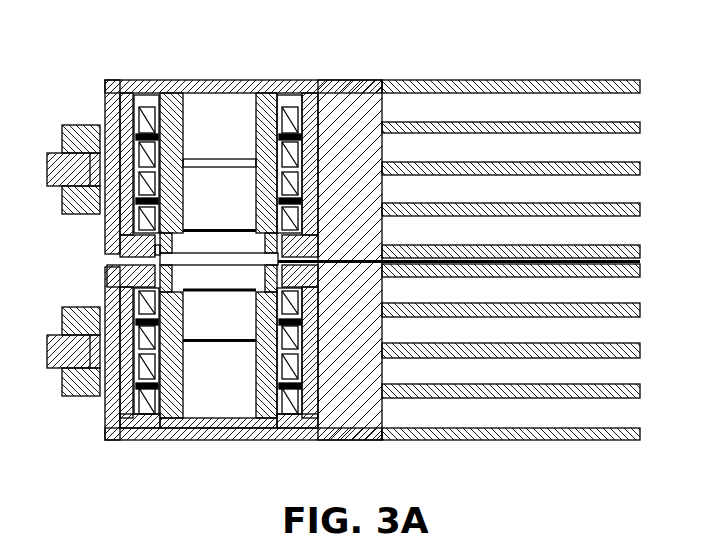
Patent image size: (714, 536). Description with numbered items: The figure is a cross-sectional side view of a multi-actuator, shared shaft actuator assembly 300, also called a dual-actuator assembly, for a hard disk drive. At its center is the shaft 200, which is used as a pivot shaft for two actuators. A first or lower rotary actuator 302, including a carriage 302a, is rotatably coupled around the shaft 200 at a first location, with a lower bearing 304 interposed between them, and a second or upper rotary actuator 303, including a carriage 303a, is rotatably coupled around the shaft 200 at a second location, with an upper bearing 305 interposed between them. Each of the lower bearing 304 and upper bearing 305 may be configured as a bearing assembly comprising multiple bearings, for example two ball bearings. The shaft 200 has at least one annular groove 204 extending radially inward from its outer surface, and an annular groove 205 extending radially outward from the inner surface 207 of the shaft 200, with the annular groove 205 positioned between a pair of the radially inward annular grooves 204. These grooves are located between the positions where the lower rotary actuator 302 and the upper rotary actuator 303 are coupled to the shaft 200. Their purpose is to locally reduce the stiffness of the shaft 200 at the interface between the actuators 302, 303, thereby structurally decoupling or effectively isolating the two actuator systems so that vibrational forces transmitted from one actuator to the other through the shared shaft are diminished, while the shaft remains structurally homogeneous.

The multi-actuator, shared shaft actuator assembly 300 is at (370, 45).
The carriage 303a is at (380, 95).
The carriage 302a is at (350, 442).
The upper rotary actuator 303 is at (80, 133).
The lower rotary actuator 302 is at (80, 396).
The shaft 200 is at (173, 100).
The annular groove 204 is at (110, 266).
The annular groove 205 is at (180, 258).
The inner surface 207 is at (255, 333).
The upper bearing 305 is at (145, 107).
The lower bearing 304 is at (142, 443).